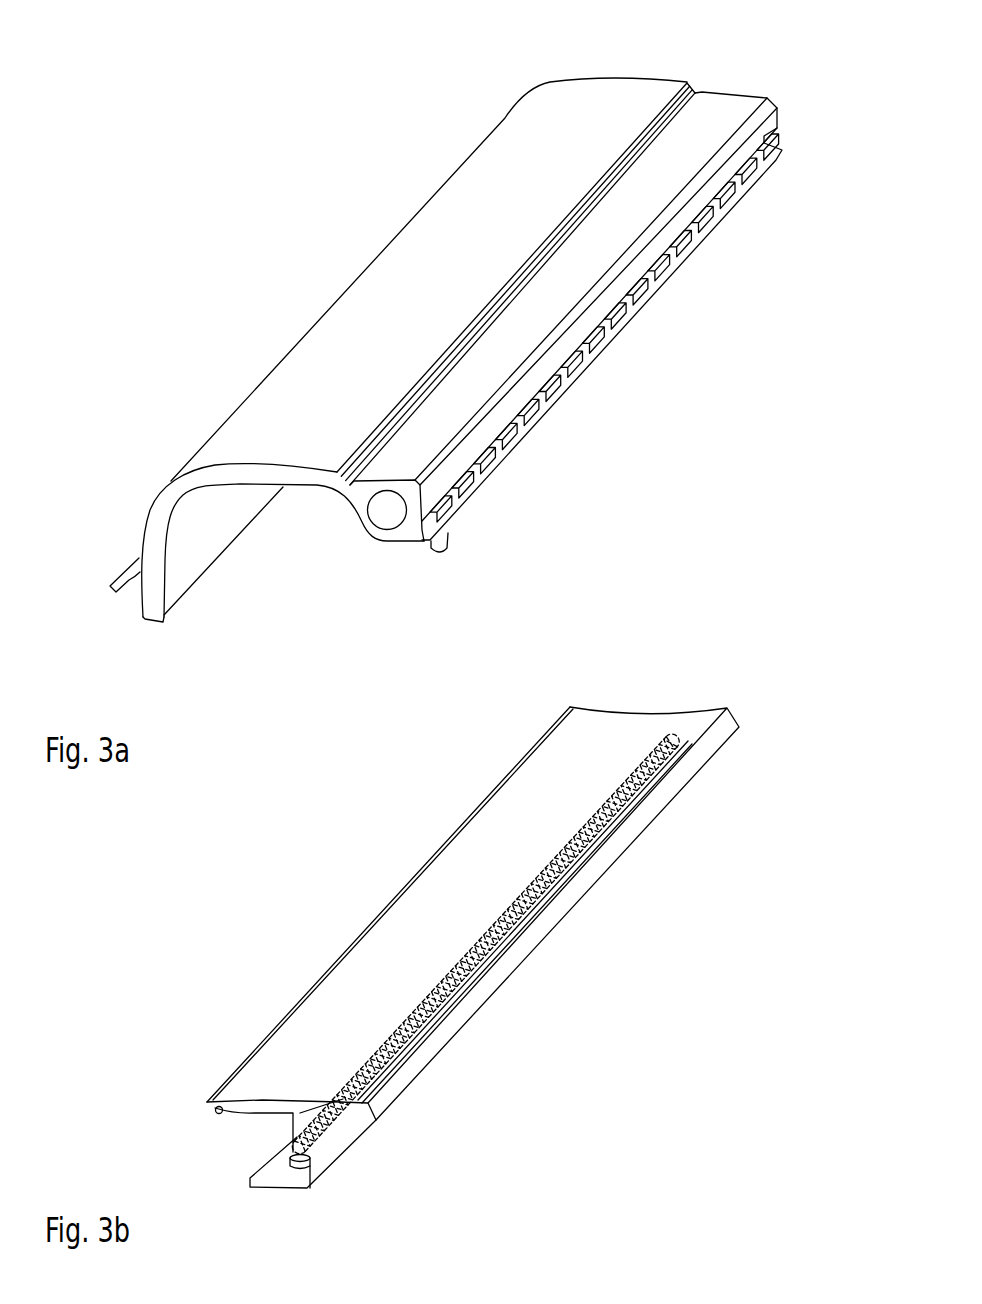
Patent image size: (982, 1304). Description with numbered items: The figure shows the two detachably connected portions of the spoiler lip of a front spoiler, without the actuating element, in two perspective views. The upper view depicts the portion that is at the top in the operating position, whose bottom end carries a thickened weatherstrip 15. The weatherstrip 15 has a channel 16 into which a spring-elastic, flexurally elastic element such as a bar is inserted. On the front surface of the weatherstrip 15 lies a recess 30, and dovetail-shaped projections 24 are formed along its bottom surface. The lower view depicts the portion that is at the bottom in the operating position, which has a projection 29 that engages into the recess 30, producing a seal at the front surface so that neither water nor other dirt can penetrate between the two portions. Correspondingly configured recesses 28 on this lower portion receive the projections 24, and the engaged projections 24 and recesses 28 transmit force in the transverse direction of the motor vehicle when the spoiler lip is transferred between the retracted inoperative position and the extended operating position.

In FIG. 3A, the recess 30 is at (698, 90).
In FIG. 3A, the dovetail-shaped projections 24 is at (577, 363).
In FIG. 3A, the channel 16 is at (386, 512).
In FIG. 3A, the weatherstrip 15 is at (400, 535).
In FIG. 3B, the recesses 28 is at (517, 905).
In FIG. 3B, the projection 29 is at (217, 1116).